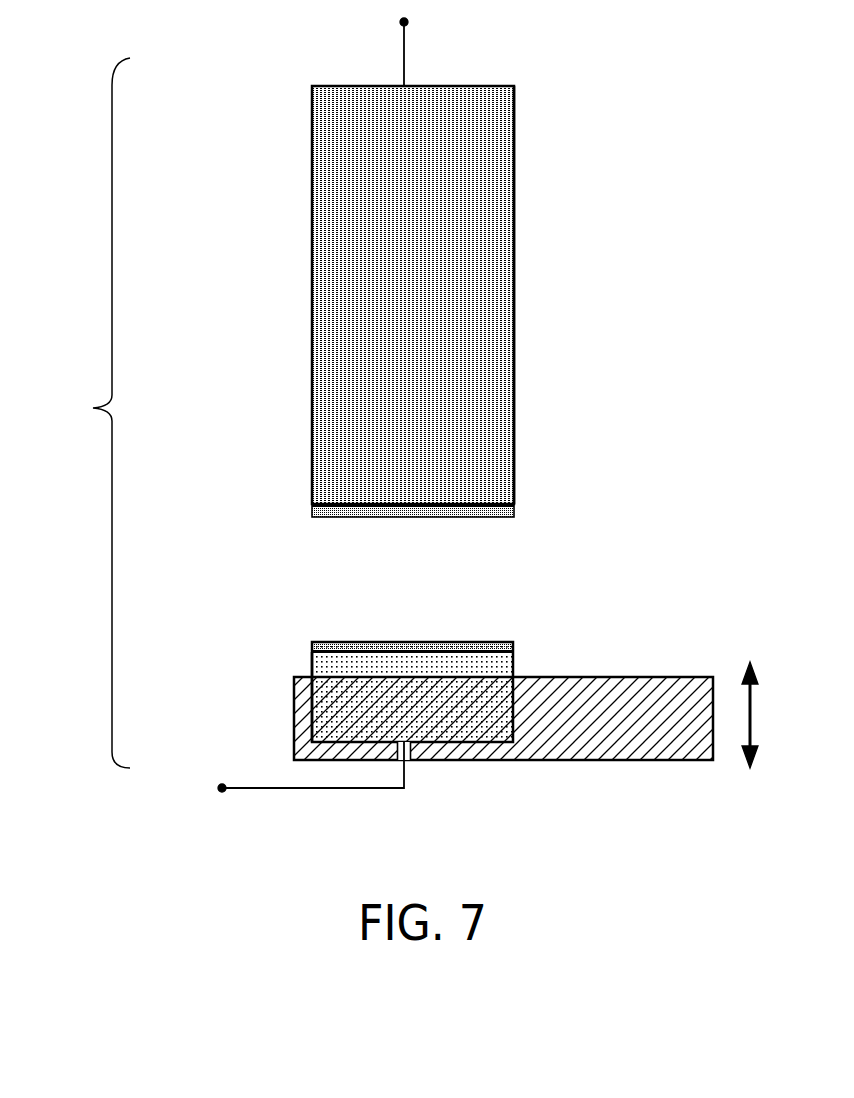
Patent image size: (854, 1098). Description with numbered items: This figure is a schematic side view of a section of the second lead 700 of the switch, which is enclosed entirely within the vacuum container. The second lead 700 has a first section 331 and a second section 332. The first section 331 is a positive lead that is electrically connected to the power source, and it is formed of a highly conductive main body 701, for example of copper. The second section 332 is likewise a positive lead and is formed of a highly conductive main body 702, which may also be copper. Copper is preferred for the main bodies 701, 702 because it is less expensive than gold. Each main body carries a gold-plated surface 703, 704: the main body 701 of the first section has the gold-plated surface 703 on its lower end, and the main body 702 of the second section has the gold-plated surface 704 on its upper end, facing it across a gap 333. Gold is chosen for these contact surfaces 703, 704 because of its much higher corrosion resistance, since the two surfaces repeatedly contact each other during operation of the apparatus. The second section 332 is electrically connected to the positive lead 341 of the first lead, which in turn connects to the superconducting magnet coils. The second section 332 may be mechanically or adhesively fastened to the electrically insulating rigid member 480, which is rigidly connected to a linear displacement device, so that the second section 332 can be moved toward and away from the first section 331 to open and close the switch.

The second lead 700 is at (82, 413).
The main body 701 is at (395, 348).
The main body 702 is at (392, 709).
The gold-plated surface 703 is at (516, 519).
The gold-plated surface 704 is at (332, 640).
The first section 331 is at (515, 218).
The second section 332 is at (325, 696).
The gap between electrodes 333 is at (399, 588).
The positive lead 341 is at (300, 790).
The electrically insulating rigid member 480 is at (628, 742).